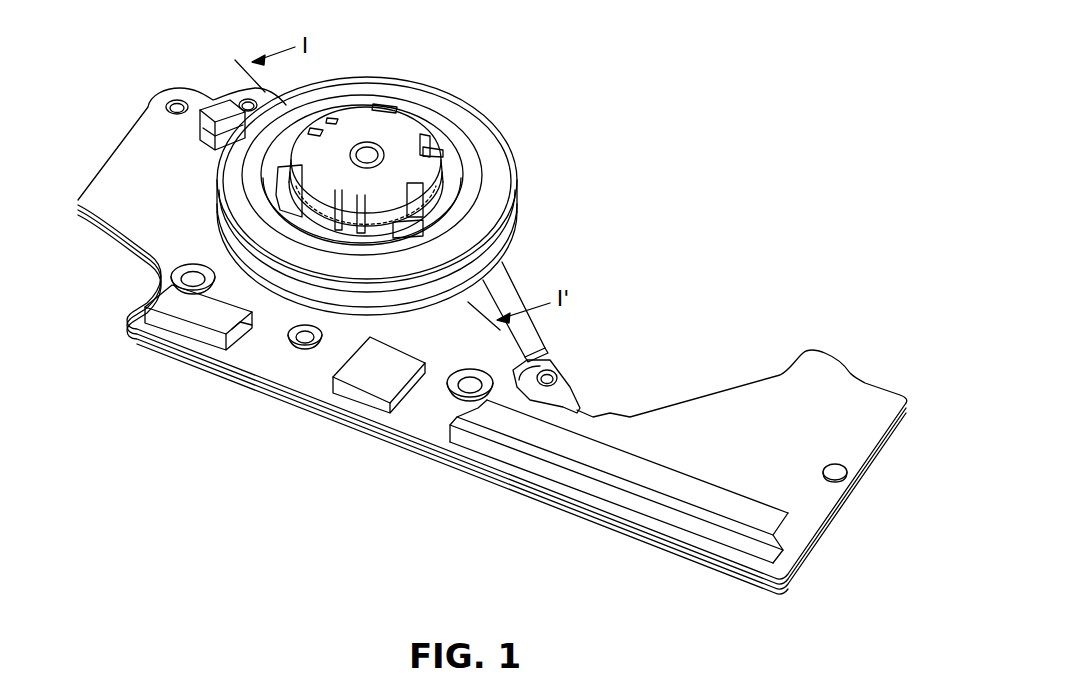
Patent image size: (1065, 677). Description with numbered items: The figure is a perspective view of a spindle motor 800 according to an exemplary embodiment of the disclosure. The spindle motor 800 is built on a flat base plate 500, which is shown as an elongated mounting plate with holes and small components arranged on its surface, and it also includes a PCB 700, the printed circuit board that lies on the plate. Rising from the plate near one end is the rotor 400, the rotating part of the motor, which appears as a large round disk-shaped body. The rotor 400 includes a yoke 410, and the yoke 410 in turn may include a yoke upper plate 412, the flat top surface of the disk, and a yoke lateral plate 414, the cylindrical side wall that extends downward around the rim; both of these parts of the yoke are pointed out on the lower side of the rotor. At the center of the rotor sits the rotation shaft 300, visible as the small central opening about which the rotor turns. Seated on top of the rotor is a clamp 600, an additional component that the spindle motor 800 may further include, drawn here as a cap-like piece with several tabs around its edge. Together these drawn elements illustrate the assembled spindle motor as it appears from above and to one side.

The rotation shaft 300 is at (368, 155).
The rotor 400 is at (380, 281).
The yoke 410 is at (348, 281).
The yoke upper plate 412 is at (300, 238).
The yoke lateral plate 414 is at (333, 298).
The base plate 500 is at (243, 101).
The clamp 600 is at (366, 118).
The PCB (printed circuit board) 700 is at (143, 177).
The spindle motor 800 is at (627, 128).